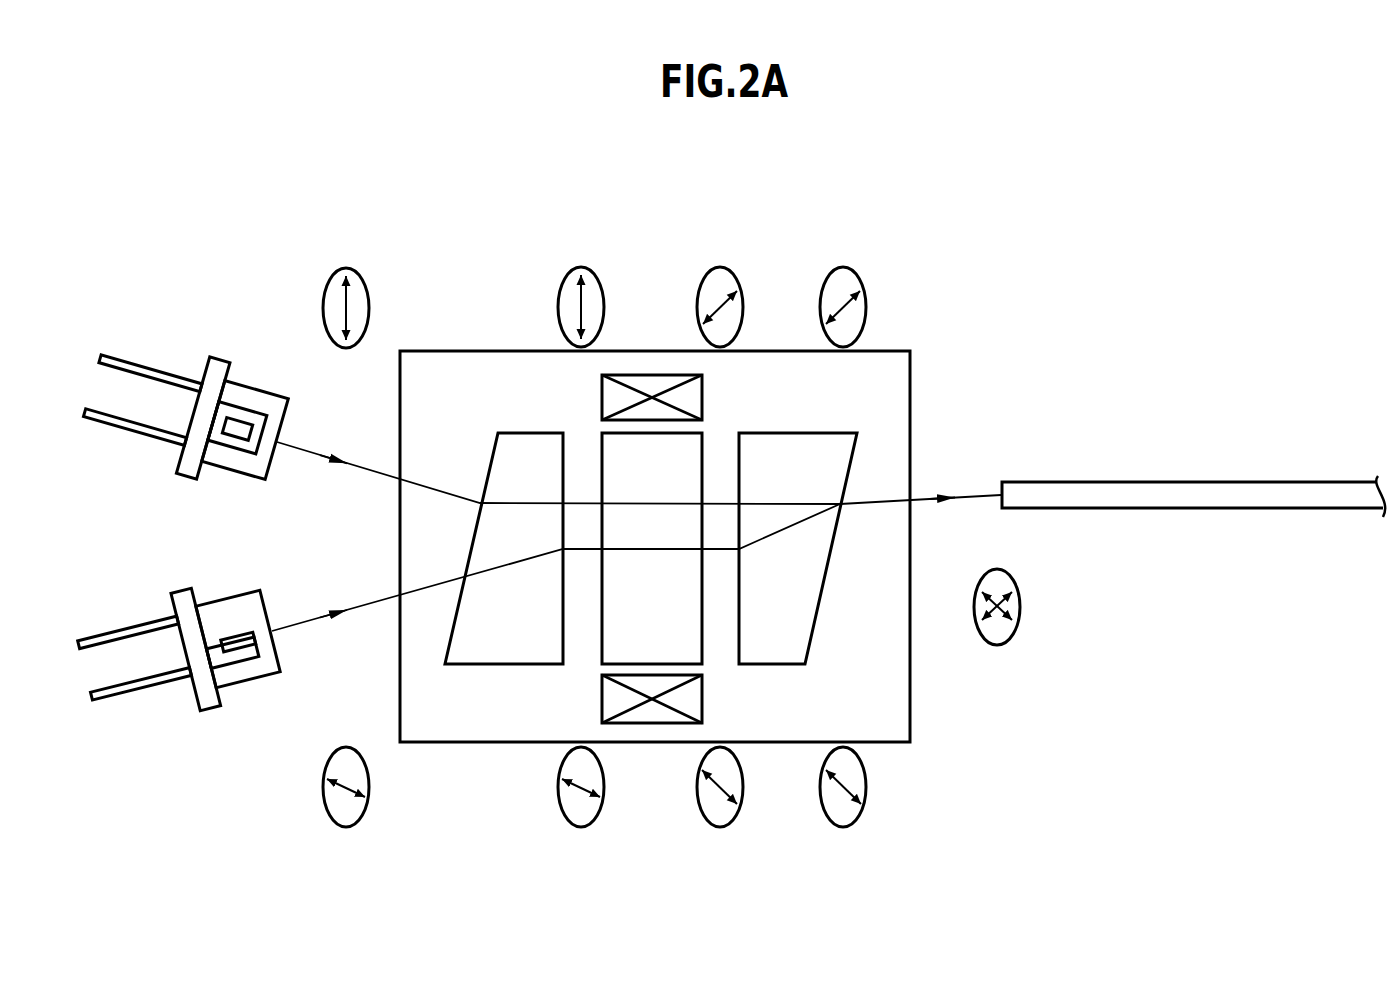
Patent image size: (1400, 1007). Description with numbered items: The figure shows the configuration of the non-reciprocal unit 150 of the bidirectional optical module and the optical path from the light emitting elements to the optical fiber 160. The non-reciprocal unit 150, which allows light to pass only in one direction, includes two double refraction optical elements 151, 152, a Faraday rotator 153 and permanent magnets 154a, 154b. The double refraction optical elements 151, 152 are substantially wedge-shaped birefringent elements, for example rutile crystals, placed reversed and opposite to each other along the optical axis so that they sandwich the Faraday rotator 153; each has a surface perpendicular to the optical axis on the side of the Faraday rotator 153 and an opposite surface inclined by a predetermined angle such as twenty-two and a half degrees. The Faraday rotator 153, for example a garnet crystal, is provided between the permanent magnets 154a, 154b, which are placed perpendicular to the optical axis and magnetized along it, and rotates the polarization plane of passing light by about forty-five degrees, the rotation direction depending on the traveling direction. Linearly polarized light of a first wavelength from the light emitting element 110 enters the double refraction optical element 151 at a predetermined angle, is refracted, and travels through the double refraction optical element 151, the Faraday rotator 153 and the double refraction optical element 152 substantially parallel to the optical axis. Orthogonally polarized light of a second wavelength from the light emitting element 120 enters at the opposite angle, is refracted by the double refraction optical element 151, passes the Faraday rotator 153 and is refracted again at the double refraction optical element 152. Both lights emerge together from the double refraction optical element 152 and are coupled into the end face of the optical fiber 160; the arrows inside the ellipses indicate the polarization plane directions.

The light emitting element 110 is at (255, 382).
The light emitting element 120 is at (232, 592).
The non-reciprocal unit 150 is at (887, 352).
The double refraction optical element 151 is at (528, 433).
The double refraction optical element 152 is at (795, 433).
The Faraday rotator 153 is at (703, 650).
The permanent magnet 154a is at (655, 375).
The permanent magnet 154b is at (660, 723).
The optical fiber 160 is at (1128, 491).